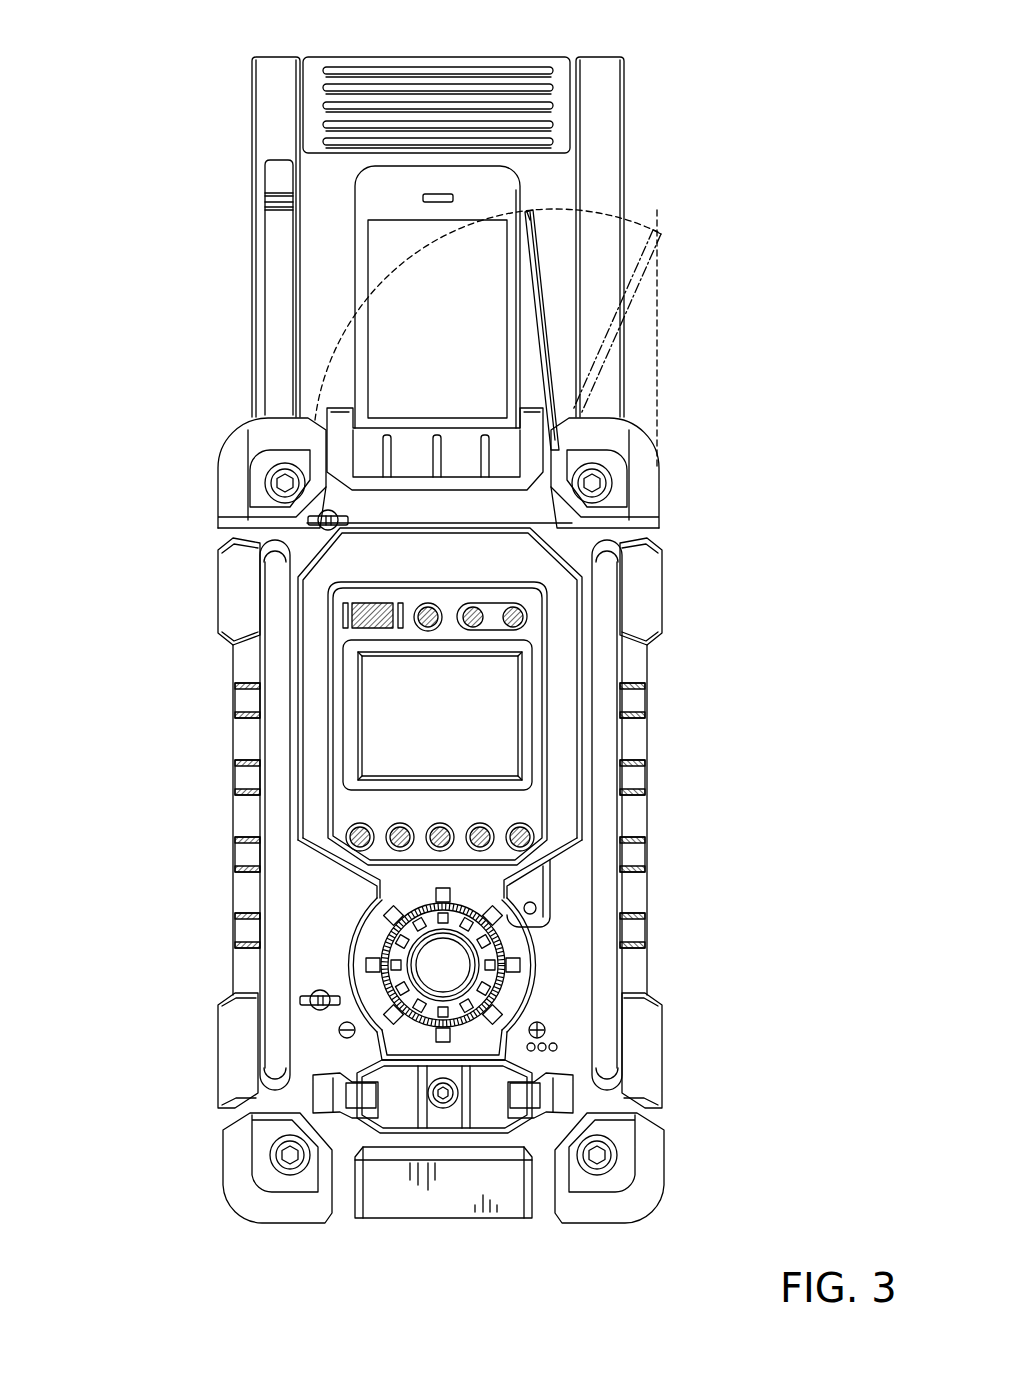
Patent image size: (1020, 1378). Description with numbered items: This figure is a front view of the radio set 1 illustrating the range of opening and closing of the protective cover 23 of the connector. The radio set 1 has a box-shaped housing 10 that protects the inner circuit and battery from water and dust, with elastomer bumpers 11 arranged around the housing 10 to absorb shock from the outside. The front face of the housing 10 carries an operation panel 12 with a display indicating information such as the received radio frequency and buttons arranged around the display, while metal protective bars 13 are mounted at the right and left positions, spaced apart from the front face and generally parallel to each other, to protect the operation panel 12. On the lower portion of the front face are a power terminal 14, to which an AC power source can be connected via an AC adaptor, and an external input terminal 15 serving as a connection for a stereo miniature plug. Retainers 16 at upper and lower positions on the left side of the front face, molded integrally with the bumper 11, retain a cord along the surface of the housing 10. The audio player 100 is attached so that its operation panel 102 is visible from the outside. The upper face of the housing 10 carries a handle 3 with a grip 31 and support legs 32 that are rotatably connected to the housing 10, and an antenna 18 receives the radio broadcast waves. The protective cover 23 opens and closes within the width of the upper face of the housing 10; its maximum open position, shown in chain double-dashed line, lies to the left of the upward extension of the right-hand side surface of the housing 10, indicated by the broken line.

The radio set 1 is at (158, 80).
The handle 3 is at (250, 75).
The housing 10 is at (228, 670).
The elastomer bumpers 11 is at (235, 483).
The operation panel 12 is at (325, 736).
The protective bars 13 is at (278, 902).
The power terminal 14 is at (487, 1130).
The external input terminal 15 is at (405, 1130).
The retainers 16 is at (285, 556).
The antenna 18 is at (275, 388).
The protective cover 23 is at (545, 287).
The grip 31 is at (450, 97).
The support legs 32 is at (268, 118).
The audio player 100 is at (355, 248).
The operation panel 102 is at (392, 347).